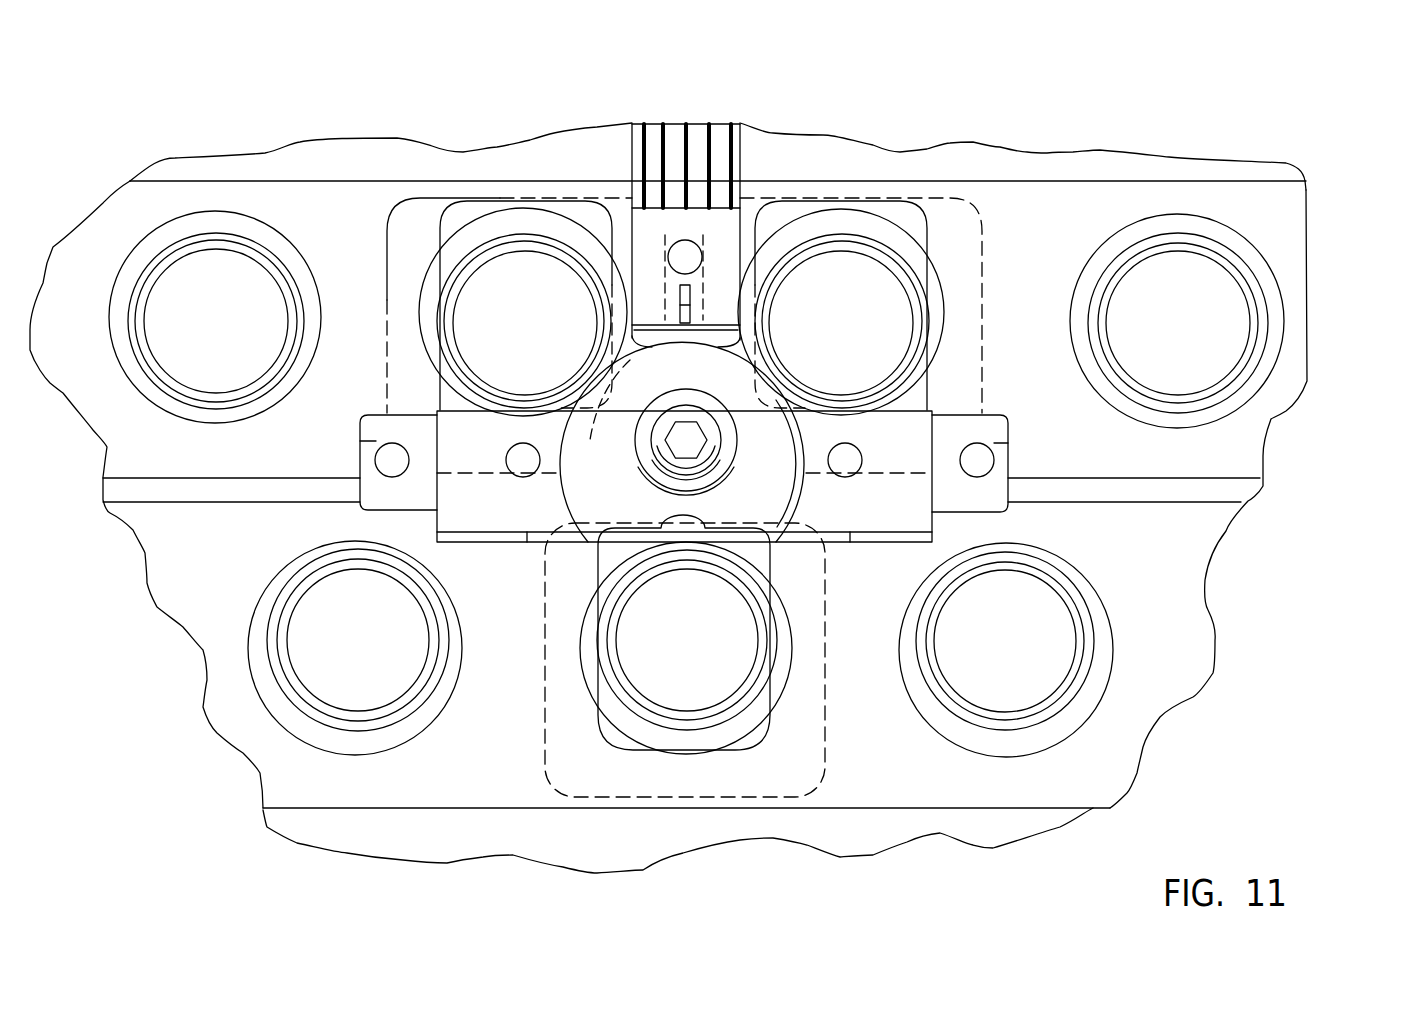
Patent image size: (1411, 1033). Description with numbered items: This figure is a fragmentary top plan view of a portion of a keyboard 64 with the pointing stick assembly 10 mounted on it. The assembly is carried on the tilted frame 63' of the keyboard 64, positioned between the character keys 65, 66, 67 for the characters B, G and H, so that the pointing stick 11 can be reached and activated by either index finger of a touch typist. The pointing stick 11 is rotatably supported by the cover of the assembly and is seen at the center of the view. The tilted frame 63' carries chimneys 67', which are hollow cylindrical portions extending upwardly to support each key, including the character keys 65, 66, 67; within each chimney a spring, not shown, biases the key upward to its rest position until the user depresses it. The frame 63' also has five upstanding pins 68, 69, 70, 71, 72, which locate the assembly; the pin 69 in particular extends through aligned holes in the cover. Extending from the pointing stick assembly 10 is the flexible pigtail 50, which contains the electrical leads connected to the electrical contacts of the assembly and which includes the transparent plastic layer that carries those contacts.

The pointing stick assembly 10 is at (886, 543).
The pointing stick 11 is at (658, 477).
The flexible pigtail 50 is at (633, 159).
The tilted frame 63' is at (686, 872).
The keyboard 64 is at (1213, 612).
The character key 65 is at (825, 737).
The character key 66 is at (387, 273).
The character key 67 is at (1134, 265).
The chimney 67' is at (215, 248).
The upstanding pin 68 is at (993, 463).
The upstanding pin 69 is at (863, 452).
The upstanding pin 70 is at (505, 456).
The upstanding pin 71 is at (372, 458).
The upstanding pin 72 is at (702, 252).